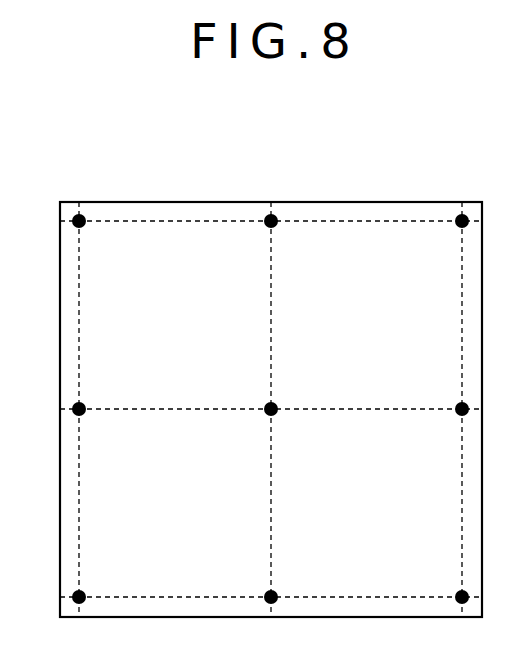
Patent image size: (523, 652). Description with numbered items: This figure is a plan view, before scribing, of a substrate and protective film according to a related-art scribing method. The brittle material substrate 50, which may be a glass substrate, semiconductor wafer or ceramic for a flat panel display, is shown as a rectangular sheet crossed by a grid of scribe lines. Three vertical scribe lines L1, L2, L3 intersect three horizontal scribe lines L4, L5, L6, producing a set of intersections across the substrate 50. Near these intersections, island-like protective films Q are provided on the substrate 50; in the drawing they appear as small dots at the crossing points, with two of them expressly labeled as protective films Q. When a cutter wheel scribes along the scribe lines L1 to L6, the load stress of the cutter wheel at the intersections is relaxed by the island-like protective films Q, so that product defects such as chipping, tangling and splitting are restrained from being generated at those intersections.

The brittle material substrate 50 is at (372, 212).
The island-like protective film Q is at (86, 412).
The scribe line L1 is at (78, 395).
The scribe line L2 is at (270, 395).
The scribe line L3 is at (462, 395).
The scribe line L4 is at (254, 221).
The scribe line L5 is at (254, 409).
The scribe line L6 is at (254, 596).